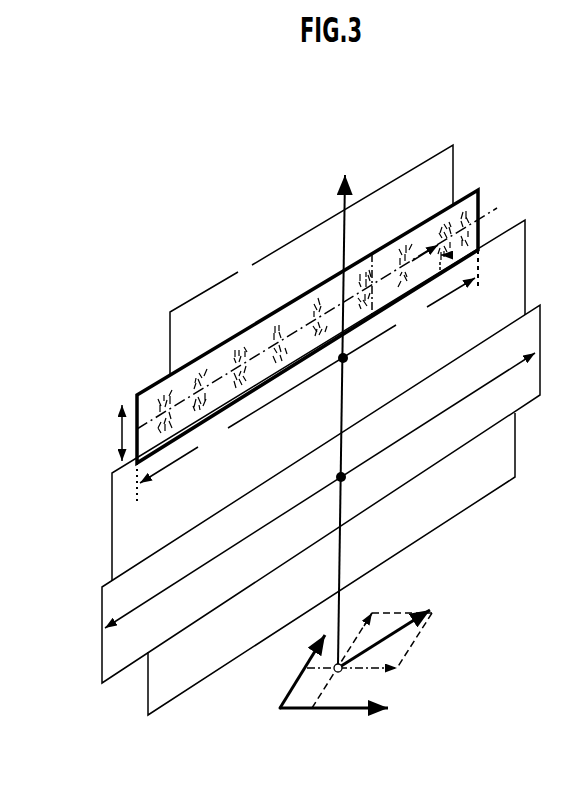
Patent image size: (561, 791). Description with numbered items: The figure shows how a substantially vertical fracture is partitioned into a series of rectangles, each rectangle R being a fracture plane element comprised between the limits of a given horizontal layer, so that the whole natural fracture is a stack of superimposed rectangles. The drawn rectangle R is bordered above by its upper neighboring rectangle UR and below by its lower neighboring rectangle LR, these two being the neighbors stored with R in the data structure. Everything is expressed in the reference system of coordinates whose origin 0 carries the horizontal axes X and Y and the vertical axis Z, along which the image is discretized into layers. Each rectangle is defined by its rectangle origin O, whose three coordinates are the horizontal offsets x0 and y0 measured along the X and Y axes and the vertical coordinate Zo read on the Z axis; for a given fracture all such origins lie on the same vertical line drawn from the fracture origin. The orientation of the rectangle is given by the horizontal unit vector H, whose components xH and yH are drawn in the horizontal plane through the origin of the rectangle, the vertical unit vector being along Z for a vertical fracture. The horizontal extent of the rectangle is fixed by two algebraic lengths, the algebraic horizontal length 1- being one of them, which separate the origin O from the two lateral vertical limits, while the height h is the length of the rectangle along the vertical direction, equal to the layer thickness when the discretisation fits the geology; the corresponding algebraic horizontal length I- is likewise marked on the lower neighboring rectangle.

The upper neighboring rectangle UR is at (161, 347).
The rectangle R is at (489, 196).
The lower neighboring rectangle LR is at (101, 534).
The height of the rectangle h is at (110, 433).
The algebraic horizontal length l- 1- is at (436, 308).
The algebraic horizontal length l- I- is at (421, 414).
The OZ axis Z is at (330, 416).
The vertical coordinate zO of the rectangle origin Zo is at (329, 470).
The rectangle origin O is at (353, 477).
The OX axis X is at (343, 716).
The OY axis Y is at (304, 658).
The origin of the reference system of coordinates 0 is at (269, 718).
The coordinate xO of the rectangle origin x0 is at (342, 677).
The coordinate yO of the rectangle origin y0 is at (331, 669).
The x component of the horizontal unit vector xH is at (410, 652).
The y component of the horizontal unit vector yH is at (398, 607).
The horizontal unit vector H is at (382, 641).